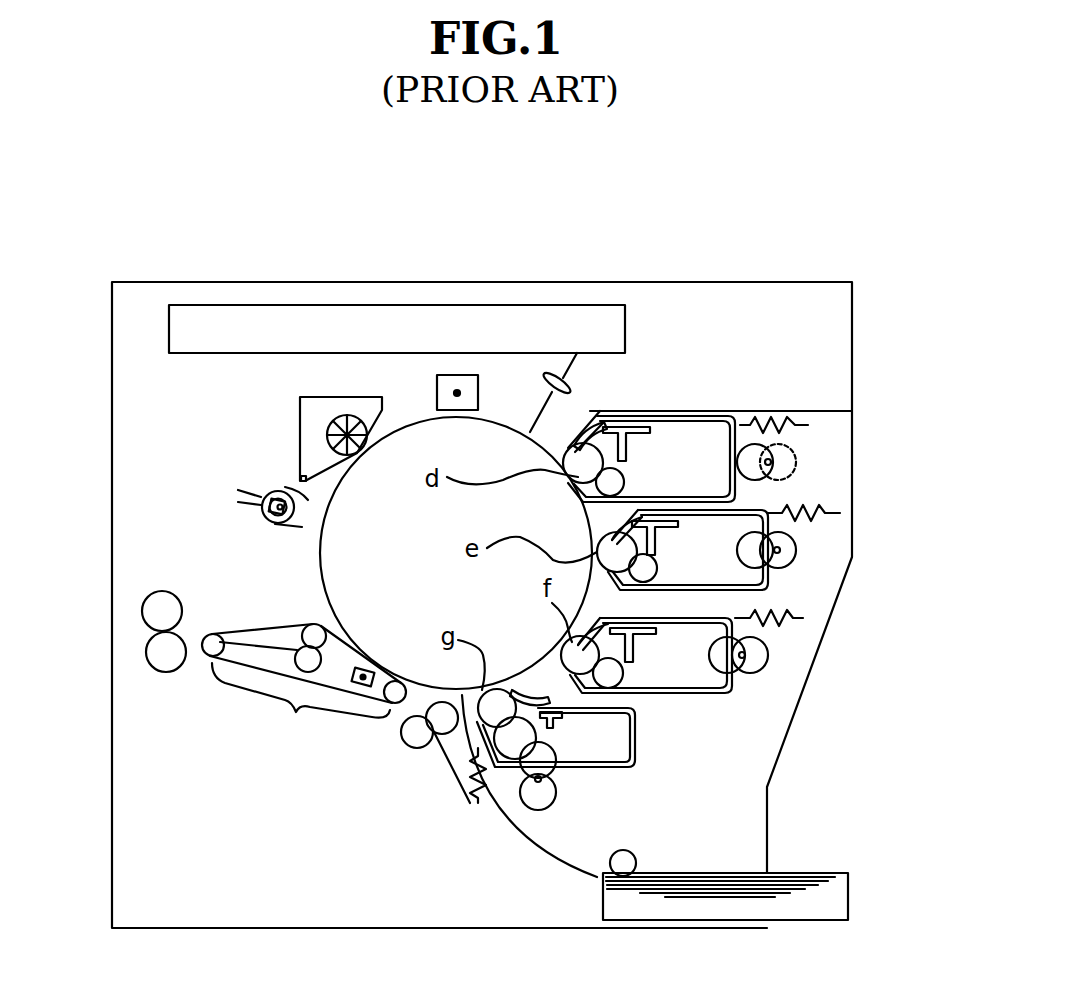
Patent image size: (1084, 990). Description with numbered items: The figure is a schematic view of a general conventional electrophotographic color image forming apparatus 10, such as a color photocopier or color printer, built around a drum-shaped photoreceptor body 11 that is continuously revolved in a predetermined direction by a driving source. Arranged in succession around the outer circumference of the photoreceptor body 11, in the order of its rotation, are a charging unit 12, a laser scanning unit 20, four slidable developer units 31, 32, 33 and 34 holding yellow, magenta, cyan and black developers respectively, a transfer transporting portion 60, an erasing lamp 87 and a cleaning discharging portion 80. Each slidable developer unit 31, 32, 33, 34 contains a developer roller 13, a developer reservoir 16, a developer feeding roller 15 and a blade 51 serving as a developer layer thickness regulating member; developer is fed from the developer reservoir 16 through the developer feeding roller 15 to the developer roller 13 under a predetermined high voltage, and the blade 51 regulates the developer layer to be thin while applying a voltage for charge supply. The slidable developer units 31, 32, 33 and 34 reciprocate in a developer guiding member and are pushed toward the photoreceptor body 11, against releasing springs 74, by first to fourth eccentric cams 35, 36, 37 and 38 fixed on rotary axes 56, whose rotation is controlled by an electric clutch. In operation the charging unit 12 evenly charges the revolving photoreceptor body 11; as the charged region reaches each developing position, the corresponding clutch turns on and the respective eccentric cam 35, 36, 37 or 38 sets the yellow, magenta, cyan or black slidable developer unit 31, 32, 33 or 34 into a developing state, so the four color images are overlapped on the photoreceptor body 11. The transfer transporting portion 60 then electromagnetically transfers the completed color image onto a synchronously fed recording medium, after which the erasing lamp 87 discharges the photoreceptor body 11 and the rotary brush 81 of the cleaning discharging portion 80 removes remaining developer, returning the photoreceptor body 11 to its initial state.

The electrophotographic color image forming apparatus 10 is at (66, 170).
The photoreceptor body 11 is at (510, 422).
The charging unit 12 is at (455, 373).
The developer roller 13 is at (583, 470).
The developer feeding roller 15 is at (625, 477).
The developer reservoir 16 is at (671, 440).
The laser scanning unit 20 is at (606, 305).
The yellow slidable developer unit 31 is at (718, 421).
The magenta slidable developer unit 32 is at (765, 495).
The cyan slidable developer unit 33 is at (725, 695).
The black slidable developer unit 34 is at (637, 745).
The first eccentric cam 35 is at (748, 418).
The second eccentric cam 36 is at (797, 545).
The third eccentric cam 37 is at (743, 673).
The fourth eccentric cam 38 is at (558, 793).
The blade 51 is at (605, 411).
The rotary axes 56 is at (797, 456).
The transfer transporting portion 60 is at (274, 665).
The releasing springs 74 is at (793, 425).
The cleaning discharging portion 80 is at (300, 432).
The rotary brush 81 is at (347, 422).
The erasing lamp 87 is at (262, 513).